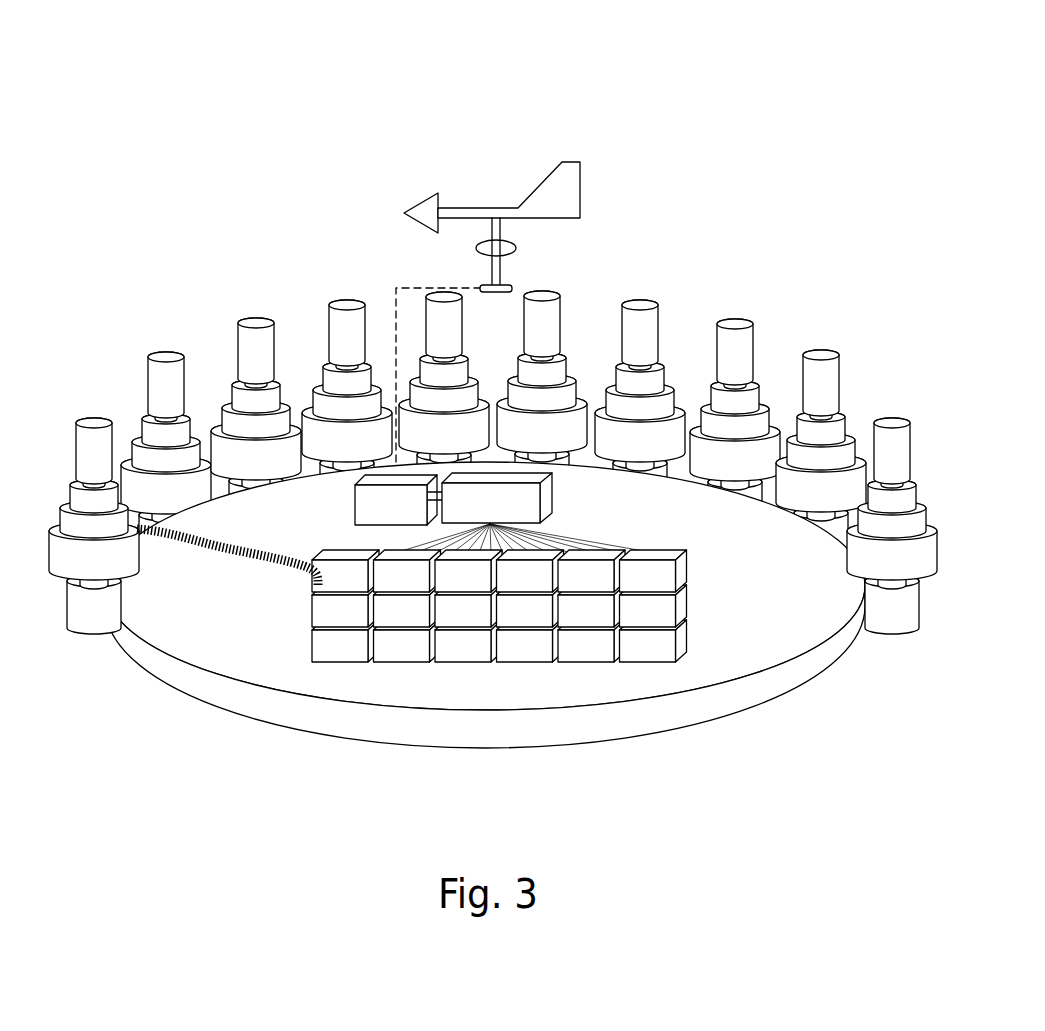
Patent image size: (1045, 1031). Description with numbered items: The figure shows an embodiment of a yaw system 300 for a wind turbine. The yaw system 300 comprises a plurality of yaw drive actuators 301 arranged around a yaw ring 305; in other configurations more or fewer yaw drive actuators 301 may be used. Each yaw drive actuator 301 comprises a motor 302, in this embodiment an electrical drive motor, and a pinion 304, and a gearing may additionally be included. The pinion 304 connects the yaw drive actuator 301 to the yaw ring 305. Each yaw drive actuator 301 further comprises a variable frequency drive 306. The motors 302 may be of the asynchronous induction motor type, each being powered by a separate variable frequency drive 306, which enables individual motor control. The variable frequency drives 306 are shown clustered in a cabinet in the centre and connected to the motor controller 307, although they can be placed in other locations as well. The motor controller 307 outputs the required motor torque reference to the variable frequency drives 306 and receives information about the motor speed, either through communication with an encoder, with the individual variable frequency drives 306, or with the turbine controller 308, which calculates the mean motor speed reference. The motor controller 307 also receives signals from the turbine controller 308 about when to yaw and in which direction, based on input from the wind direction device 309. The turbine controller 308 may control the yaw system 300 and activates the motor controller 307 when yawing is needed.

The yaw system 300 is at (153, 181).
The yaw drive actuator 301 is at (913, 503).
The motor 302 is at (87, 440).
The pinion 304 is at (93, 603).
The yaw ring 305 is at (673, 713).
The variable frequency drive 306 is at (345, 572).
The motor controller 307 is at (497, 500).
The turbine controller 308 is at (373, 502).
The wind direction device 309 is at (553, 175).